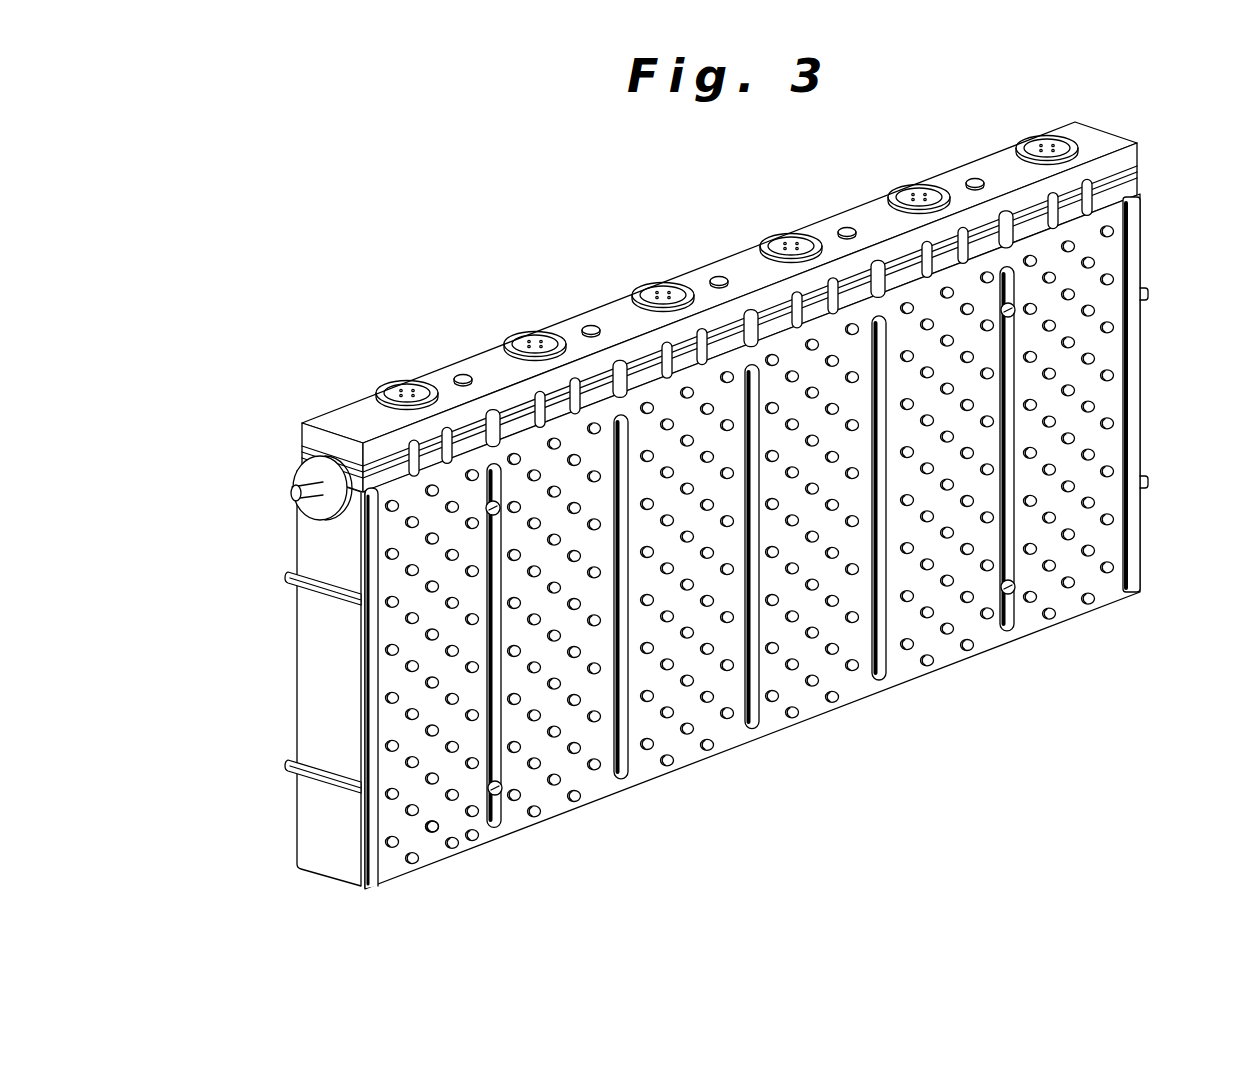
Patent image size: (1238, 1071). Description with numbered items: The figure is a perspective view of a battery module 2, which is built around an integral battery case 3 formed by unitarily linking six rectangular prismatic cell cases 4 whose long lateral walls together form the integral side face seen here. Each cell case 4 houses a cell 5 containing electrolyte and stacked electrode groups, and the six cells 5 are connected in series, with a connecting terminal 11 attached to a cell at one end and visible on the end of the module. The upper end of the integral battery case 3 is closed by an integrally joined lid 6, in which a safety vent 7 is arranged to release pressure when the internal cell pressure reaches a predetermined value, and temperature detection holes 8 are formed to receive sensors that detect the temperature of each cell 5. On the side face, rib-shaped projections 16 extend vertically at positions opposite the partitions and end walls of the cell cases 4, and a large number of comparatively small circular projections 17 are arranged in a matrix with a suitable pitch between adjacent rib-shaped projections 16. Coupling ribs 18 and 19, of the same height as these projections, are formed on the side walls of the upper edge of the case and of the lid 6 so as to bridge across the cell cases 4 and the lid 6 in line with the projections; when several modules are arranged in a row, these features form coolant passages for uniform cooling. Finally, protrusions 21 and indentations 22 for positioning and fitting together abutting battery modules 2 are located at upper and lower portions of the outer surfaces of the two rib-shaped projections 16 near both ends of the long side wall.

The battery module 2 is at (283, 409).
The integral battery case 3 is at (288, 659).
The cell case 4 is at (396, 857).
The cell 5 is at (428, 870).
The lid 6 is at (386, 448).
The safety vent 7 is at (790, 246).
The temperature detection hole 8 is at (972, 185).
The connecting terminal 11 is at (300, 476).
The rib-shaped projection 16 is at (366, 703).
The circular projection 17 is at (473, 823).
The coupling rib 18 is at (496, 416).
The coupling rib 19 is at (450, 430).
The protrusion 21 is at (1017, 311).
The indentation 22 is at (487, 510).